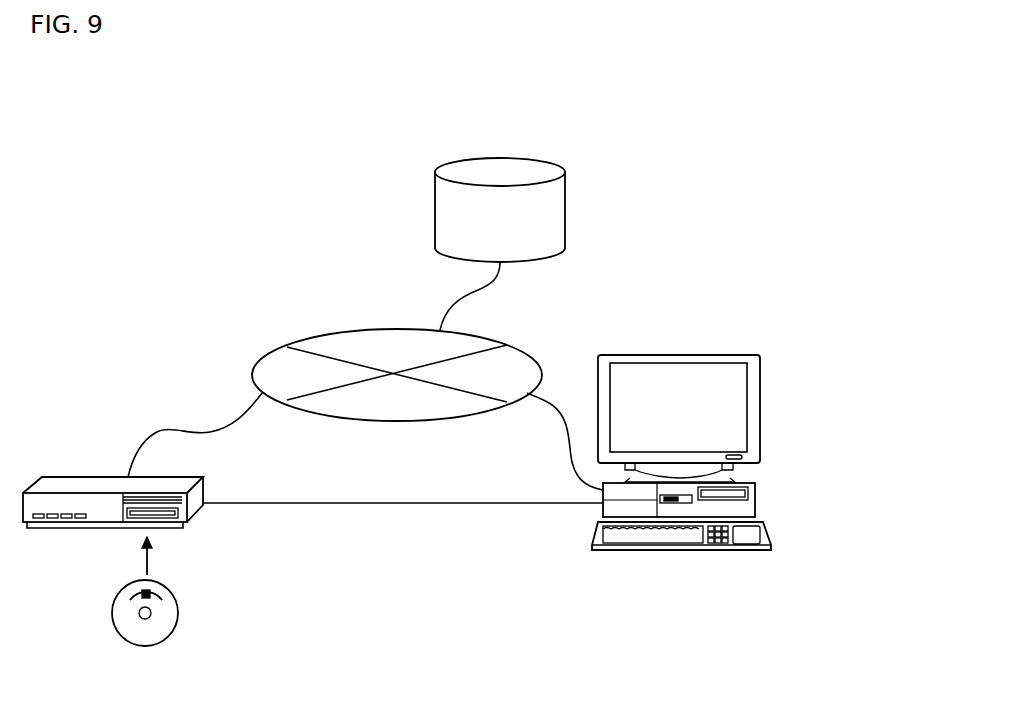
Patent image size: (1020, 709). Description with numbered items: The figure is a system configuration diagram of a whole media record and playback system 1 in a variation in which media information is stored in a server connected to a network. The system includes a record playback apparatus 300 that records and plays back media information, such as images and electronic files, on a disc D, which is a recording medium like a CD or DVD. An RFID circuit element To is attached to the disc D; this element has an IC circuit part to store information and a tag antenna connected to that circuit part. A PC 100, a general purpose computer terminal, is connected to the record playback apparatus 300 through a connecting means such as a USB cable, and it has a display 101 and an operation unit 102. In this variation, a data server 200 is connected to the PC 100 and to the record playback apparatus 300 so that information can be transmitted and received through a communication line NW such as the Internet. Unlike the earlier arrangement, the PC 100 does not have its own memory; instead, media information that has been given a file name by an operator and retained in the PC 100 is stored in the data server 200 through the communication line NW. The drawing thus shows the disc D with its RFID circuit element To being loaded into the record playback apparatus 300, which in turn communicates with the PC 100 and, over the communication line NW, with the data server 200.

The media record and playback system 1 is at (247, 175).
The data server 200 is at (503, 158).
The communication line NW is at (312, 335).
The PC terminal 100 is at (797, 436).
The display 101 is at (682, 353).
The operation unit 102 is at (672, 550).
The record playback apparatus 300 is at (190, 492).
The disc D is at (178, 608).
The RFID circuit element To is at (162, 593).